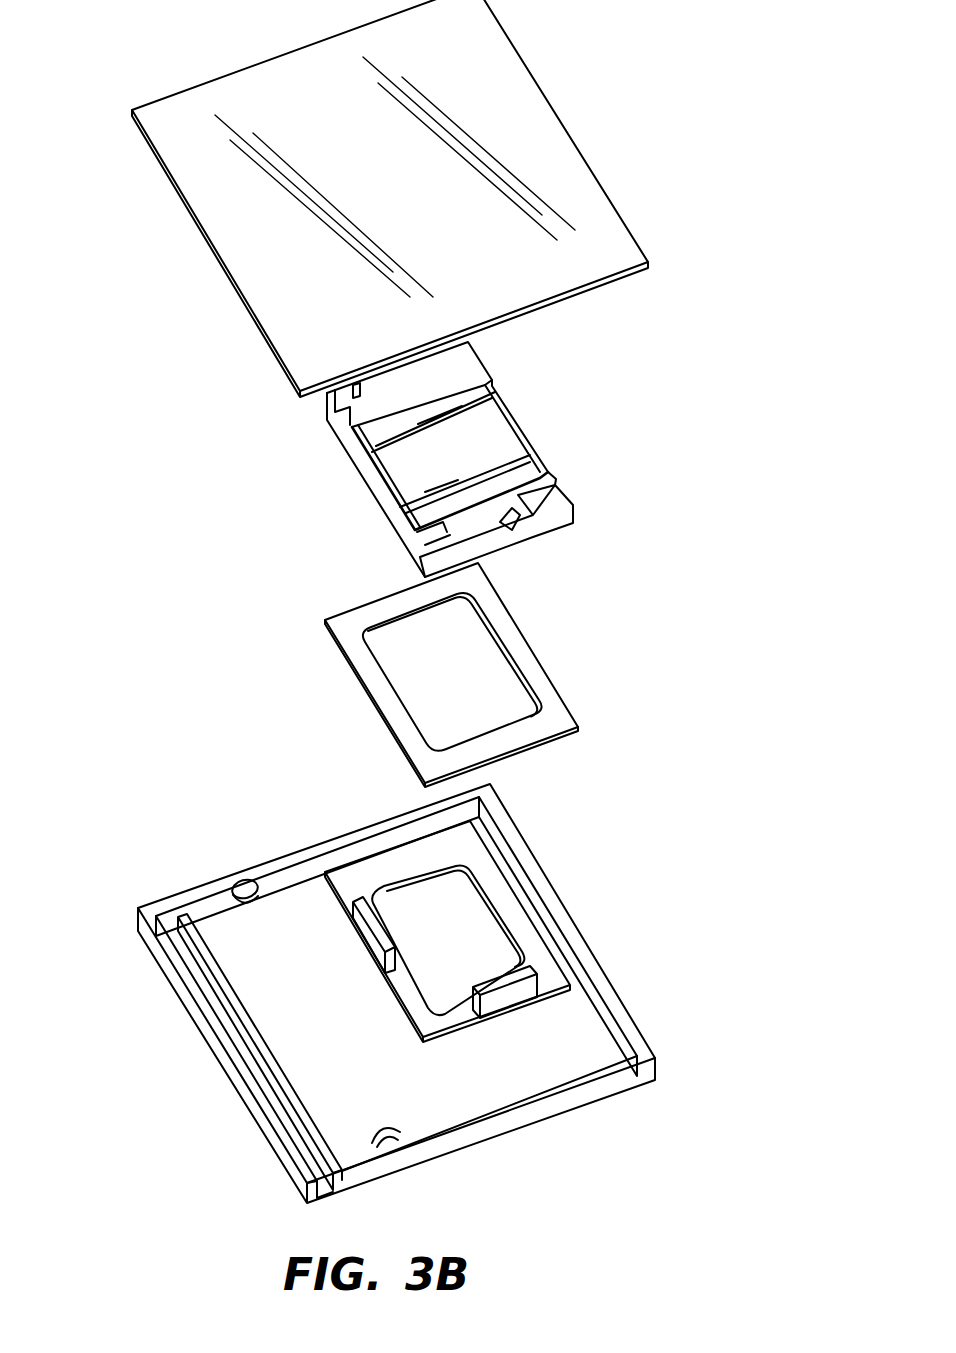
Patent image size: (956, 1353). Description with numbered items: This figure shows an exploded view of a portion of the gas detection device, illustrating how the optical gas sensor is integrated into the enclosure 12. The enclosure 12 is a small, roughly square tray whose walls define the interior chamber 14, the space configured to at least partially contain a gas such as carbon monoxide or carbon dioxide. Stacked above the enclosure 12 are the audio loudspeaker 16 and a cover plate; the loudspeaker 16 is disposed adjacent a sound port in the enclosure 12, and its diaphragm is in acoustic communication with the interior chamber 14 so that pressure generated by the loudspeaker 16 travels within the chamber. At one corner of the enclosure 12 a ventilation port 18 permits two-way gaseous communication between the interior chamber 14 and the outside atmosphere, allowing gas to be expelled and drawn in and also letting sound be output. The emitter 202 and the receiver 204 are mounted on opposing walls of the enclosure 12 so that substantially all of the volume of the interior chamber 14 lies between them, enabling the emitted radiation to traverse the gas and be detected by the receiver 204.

The enclosure 12 is at (553, 846).
The interior chamber 14 is at (278, 1017).
The audio loudspeaker 16 is at (500, 398).
The ventilation port 18 is at (322, 1198).
The emitter 202 is at (228, 890).
The receiver 204 is at (390, 1128).